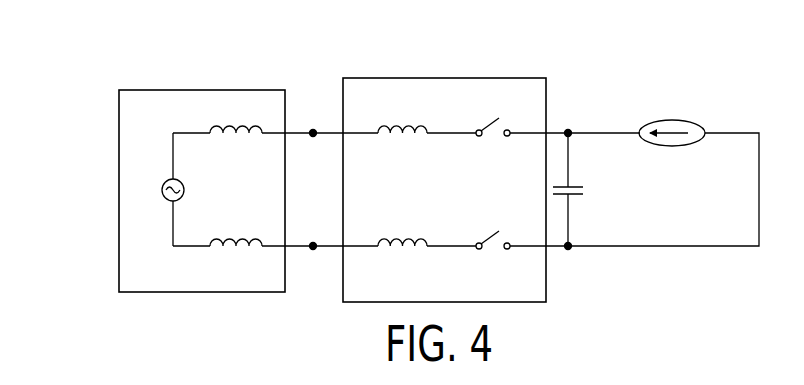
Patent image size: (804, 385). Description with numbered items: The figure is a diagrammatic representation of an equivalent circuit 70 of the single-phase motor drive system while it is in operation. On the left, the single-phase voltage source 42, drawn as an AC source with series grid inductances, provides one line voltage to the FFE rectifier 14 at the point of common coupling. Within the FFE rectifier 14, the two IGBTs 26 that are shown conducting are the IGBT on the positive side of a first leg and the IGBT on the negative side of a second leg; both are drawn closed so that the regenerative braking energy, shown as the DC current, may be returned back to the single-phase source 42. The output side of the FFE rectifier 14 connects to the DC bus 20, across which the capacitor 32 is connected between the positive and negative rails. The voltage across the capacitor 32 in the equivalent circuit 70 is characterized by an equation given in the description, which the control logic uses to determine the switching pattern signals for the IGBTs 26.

The equivalent circuit 70 is at (87, 55).
The single-phase voltage source 42 is at (203, 89).
The FFE rectifier 14 is at (443, 78).
The insulated gate bipolar transistors 26 is at (490, 142).
The DC bus 20 is at (570, 158).
The capacitor 32 is at (575, 196).